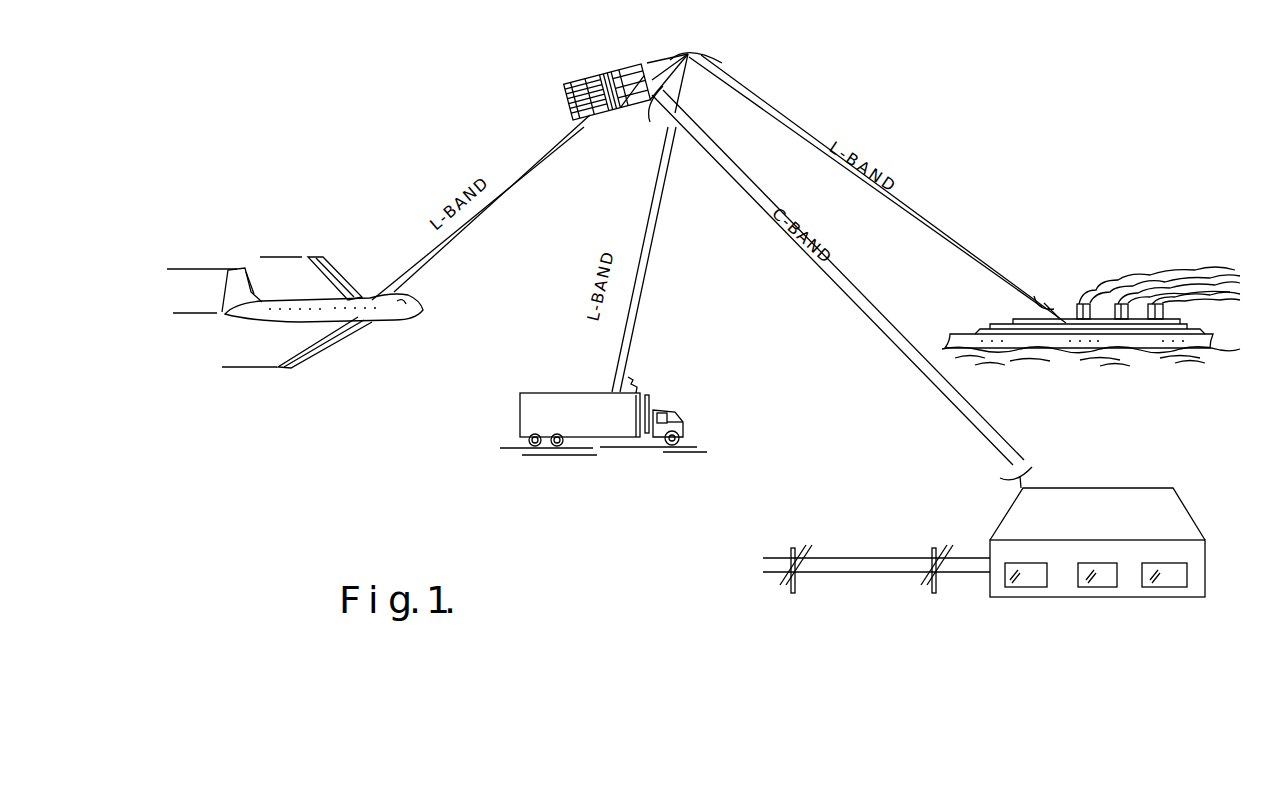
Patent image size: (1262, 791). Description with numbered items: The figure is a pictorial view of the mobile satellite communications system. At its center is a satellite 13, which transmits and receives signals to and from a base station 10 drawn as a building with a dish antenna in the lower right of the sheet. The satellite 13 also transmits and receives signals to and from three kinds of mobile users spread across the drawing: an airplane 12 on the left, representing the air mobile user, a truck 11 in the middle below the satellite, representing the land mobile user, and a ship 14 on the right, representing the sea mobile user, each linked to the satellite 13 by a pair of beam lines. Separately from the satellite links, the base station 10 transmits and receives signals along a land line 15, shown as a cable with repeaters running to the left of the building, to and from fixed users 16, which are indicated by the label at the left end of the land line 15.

The base station 10 is at (1185, 502).
The truck 11 is at (552, 396).
The airplane 12 is at (397, 318).
The satellite 13 is at (598, 74).
The ship 14 is at (957, 334).
The land line 15 is at (881, 557).
The fixed users 16 is at (725, 598).